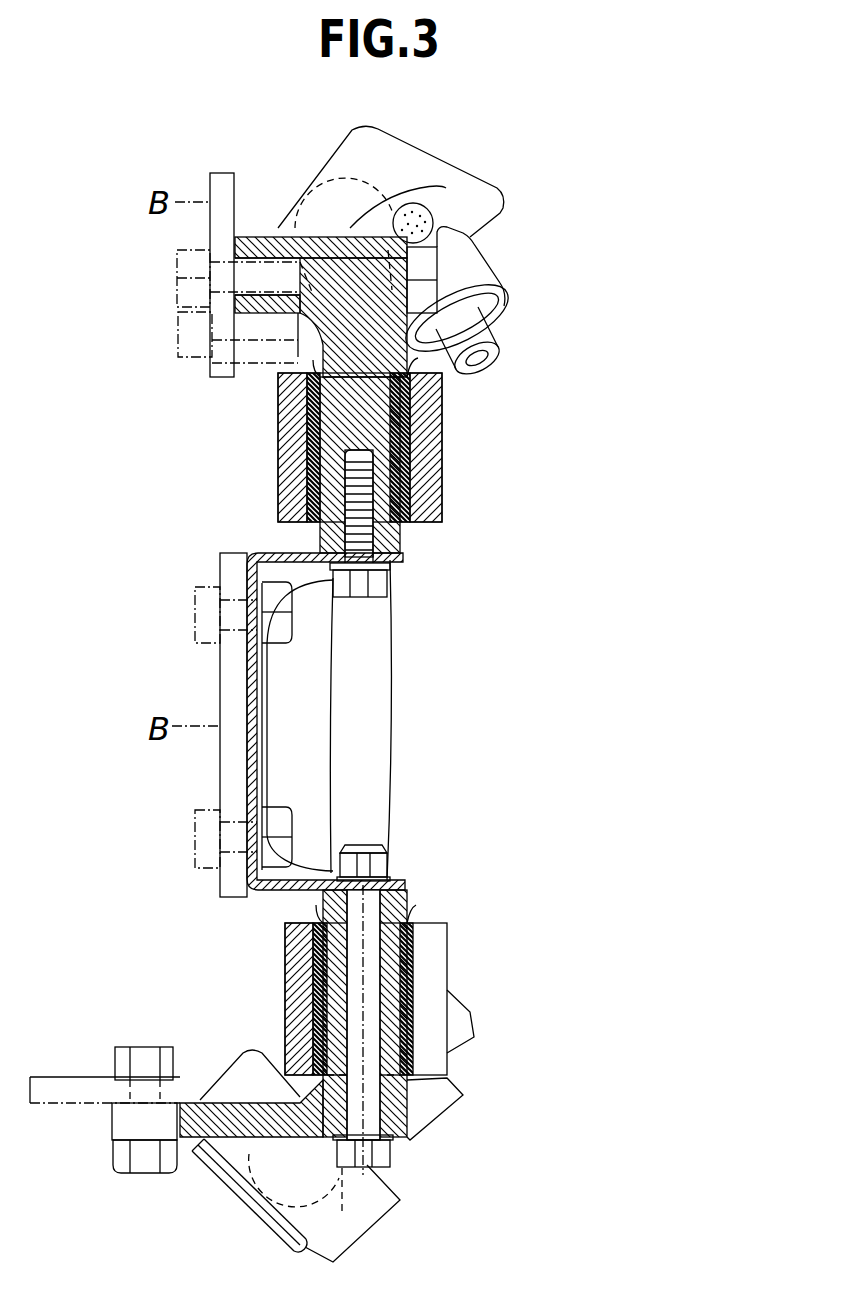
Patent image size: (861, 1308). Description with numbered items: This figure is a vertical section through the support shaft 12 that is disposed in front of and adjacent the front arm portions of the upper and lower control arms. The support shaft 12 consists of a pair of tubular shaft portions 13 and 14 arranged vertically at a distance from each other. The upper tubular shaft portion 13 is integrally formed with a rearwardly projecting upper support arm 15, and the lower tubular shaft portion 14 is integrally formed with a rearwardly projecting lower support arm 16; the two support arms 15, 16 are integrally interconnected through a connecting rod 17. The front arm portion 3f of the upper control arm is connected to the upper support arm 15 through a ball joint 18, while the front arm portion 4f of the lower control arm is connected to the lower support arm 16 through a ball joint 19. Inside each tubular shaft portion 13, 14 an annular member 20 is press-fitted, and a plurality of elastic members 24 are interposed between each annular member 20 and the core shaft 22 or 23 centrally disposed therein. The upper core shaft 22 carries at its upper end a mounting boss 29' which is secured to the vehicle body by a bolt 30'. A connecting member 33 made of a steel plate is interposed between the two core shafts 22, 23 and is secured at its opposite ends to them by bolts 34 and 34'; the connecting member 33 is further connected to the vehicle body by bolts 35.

The front arm portion 3f is at (436, 165).
The ball joint 18 is at (322, 180).
The mounting boss 29' is at (321, 266).
The bolt 30' is at (204, 278).
The upper support arm 15 is at (462, 272).
The support shaft 12 is at (442, 445).
The upper tubular shaft portion 13 is at (442, 490).
The annular member 20 is at (300, 408).
The elastic member 24 is at (306, 455).
The upper core shaft 22 is at (350, 447).
The bolt 34 is at (405, 577).
The connecting member 33 is at (262, 552).
The bolt 35 is at (192, 612).
The connecting rod 17 is at (385, 690).
The bolt 34' is at (401, 848).
The lower tubular shaft portion 14 is at (447, 953).
The lower core shaft 23 is at (327, 1022).
The lower support arm 16 is at (440, 1098).
The ball joint 19 is at (275, 1196).
The front arm portion 4f is at (372, 1218).